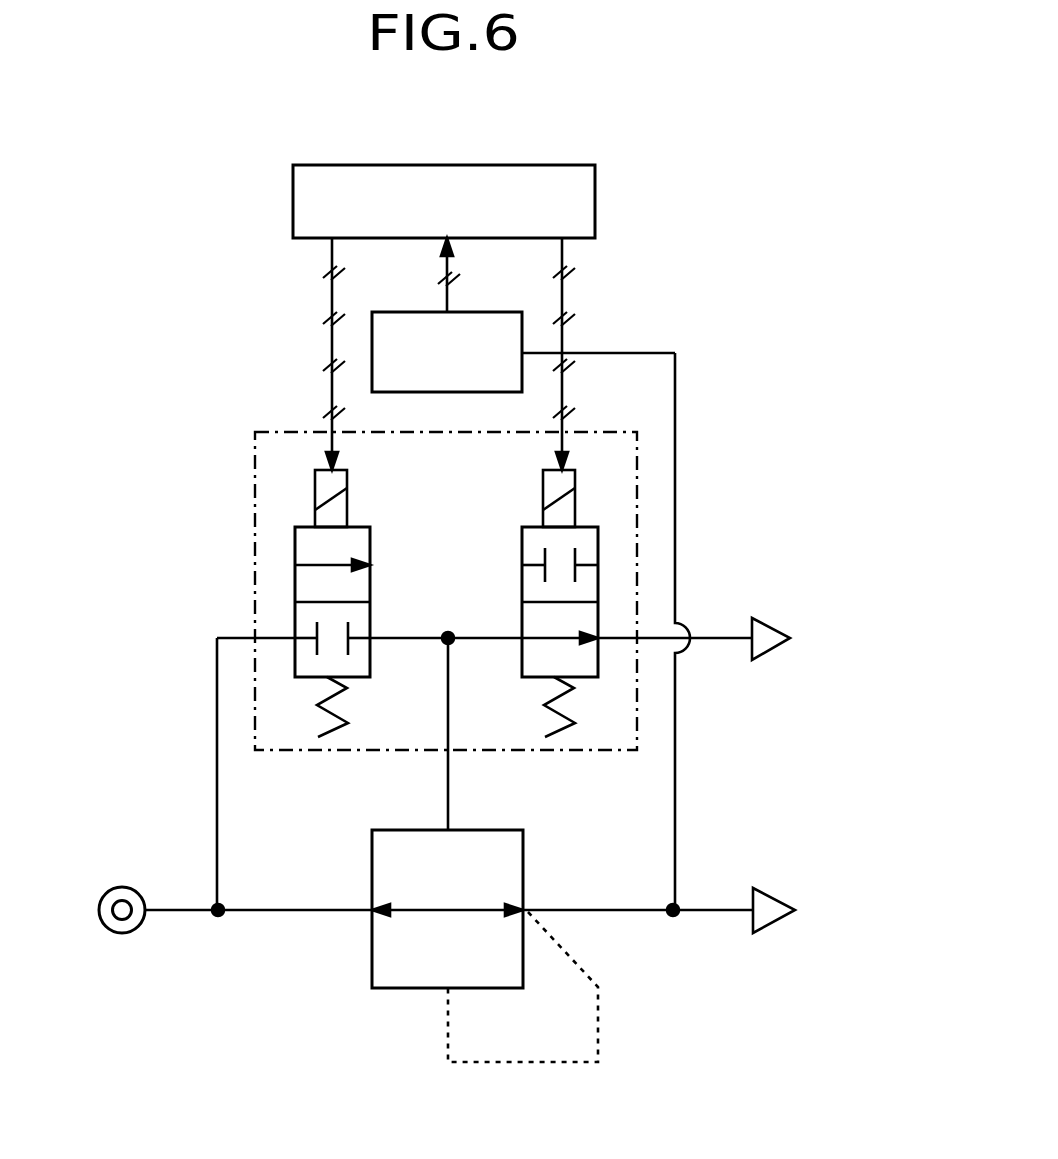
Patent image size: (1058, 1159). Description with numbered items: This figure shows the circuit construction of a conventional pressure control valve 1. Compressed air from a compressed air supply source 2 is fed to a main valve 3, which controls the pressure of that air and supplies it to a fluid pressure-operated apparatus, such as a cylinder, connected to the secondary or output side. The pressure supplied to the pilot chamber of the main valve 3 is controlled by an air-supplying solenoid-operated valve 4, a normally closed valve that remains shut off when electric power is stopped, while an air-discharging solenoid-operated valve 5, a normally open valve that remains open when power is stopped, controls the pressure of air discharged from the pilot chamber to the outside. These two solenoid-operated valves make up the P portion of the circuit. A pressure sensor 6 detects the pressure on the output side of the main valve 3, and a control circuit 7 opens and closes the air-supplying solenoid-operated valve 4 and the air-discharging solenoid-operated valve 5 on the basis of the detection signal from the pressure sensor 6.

The pressure control valve 1 is at (731, 127).
The compressed air supply source 2 is at (134, 889).
The main valve 3 is at (524, 849).
The air-supplying solenoid-operated valve 4 is at (364, 520).
The air-discharging solenoid-operated valve 5 is at (586, 520).
The pressure sensor 6 is at (480, 312).
The control circuit 7 is at (596, 192).
The P portion P is at (638, 499).